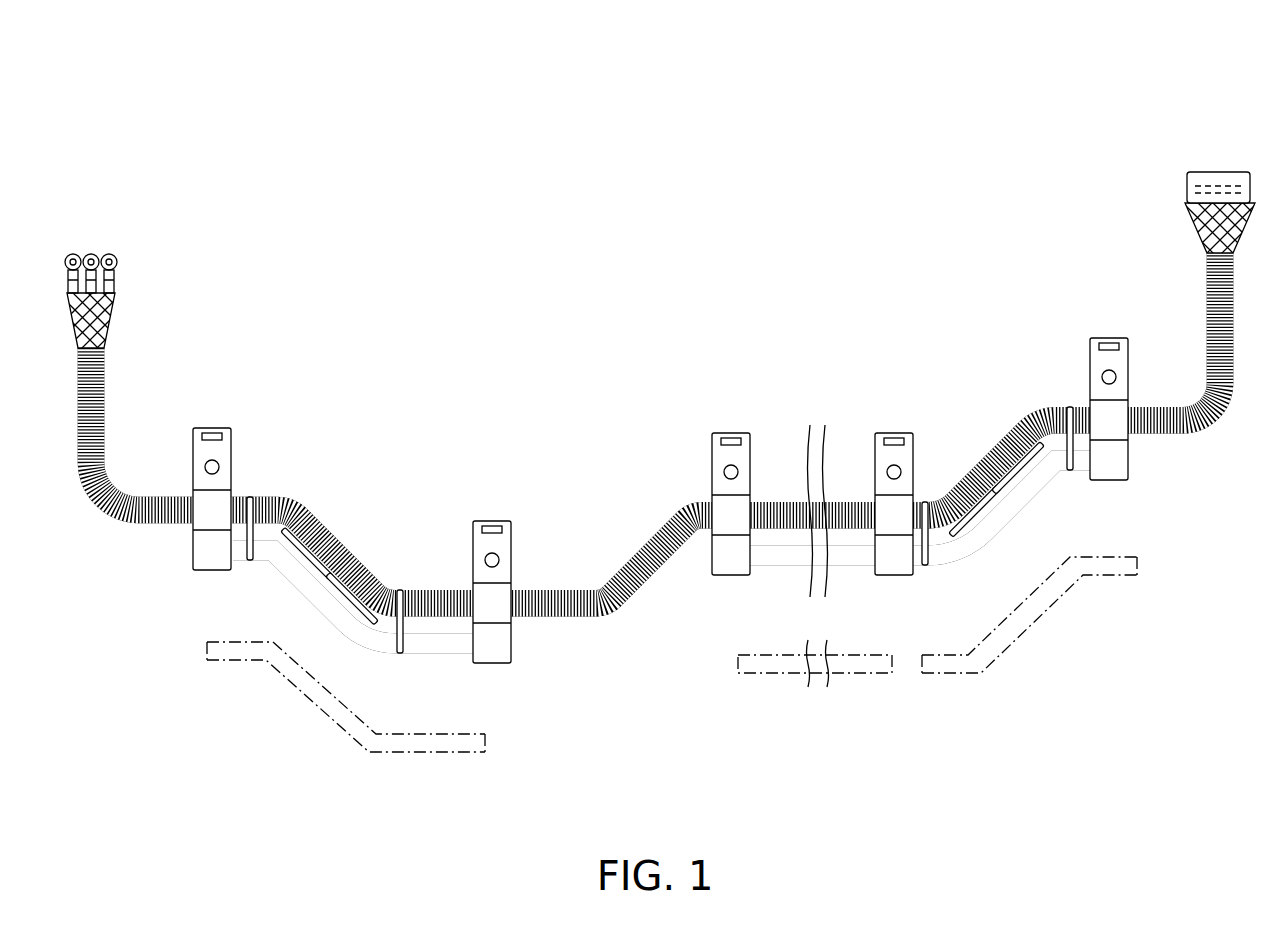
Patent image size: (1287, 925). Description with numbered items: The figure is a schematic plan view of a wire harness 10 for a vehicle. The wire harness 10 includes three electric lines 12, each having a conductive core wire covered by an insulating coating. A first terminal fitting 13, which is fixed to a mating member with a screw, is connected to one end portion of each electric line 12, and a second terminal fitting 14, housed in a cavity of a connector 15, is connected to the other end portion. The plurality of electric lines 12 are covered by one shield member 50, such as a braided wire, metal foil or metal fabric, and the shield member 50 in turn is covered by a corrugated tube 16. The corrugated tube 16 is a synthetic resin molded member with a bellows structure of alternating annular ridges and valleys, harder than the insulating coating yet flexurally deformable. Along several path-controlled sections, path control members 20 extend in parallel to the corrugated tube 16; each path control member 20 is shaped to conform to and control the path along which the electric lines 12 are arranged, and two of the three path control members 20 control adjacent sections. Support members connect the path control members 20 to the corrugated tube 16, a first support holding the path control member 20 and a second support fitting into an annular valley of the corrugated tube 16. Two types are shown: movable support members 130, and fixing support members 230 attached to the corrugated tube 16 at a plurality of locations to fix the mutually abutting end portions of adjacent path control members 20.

The wire harness 10 is at (1000, 138).
The electric line 12 is at (112, 292).
The first terminal fitting 13 is at (117, 260).
The second terminal fitting 14 is at (1191, 160).
The connector 15 is at (1226, 172).
The corrugated tube 16 is at (625, 556).
The path control member 20 is at (443, 655).
The shield member 50 is at (110, 325).
The movable support member 130 is at (285, 578).
The fixing support member 230 is at (215, 572).